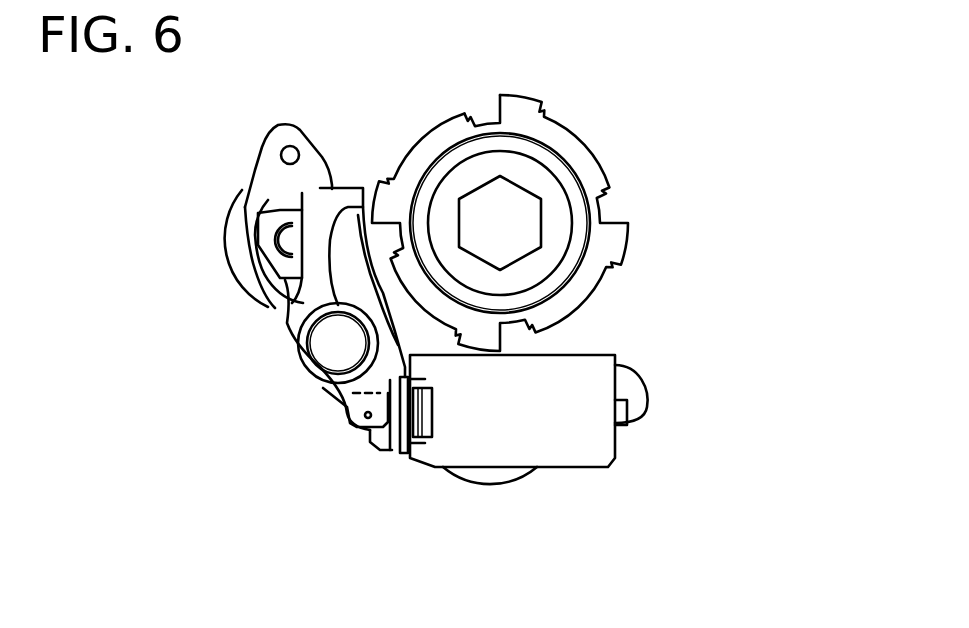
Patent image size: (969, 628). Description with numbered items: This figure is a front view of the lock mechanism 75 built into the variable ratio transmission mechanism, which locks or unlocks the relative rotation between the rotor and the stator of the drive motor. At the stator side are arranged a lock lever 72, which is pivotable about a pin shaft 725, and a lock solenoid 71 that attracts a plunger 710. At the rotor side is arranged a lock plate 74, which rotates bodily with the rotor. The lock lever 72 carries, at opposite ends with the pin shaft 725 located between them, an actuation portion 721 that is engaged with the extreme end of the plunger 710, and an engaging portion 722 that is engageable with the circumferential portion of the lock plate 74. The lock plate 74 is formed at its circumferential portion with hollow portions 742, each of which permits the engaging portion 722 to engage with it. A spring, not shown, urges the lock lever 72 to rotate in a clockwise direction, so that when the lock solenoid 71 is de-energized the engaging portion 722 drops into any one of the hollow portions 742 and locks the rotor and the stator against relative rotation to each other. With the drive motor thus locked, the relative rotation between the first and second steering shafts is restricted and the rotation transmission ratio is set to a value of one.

The lock solenoid 71 is at (562, 440).
The plunger 710 is at (390, 457).
The lock lever 72 is at (312, 239).
The actuation portion 721 is at (343, 410).
The engaging portion 722 is at (348, 186).
The pin shaft 725 is at (337, 352).
The lock plate 74 is at (585, 168).
The hollow portions 742 is at (482, 120).
The lock mechanism 75 is at (600, 117).